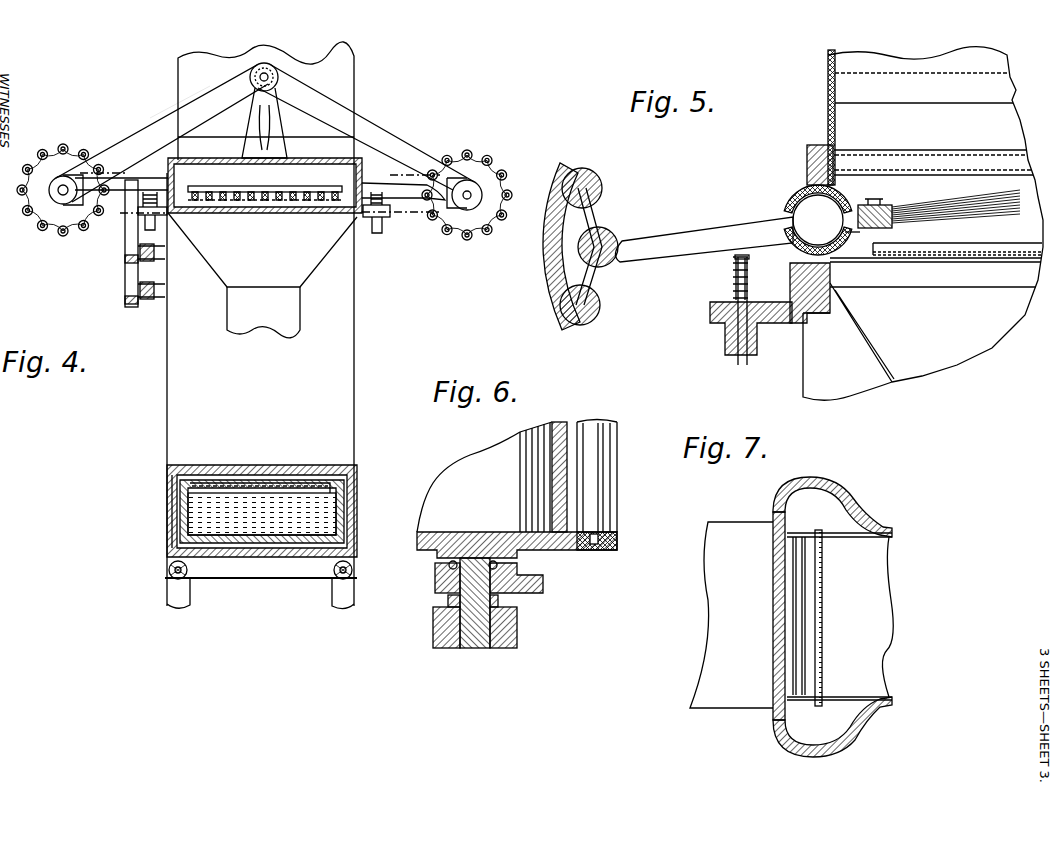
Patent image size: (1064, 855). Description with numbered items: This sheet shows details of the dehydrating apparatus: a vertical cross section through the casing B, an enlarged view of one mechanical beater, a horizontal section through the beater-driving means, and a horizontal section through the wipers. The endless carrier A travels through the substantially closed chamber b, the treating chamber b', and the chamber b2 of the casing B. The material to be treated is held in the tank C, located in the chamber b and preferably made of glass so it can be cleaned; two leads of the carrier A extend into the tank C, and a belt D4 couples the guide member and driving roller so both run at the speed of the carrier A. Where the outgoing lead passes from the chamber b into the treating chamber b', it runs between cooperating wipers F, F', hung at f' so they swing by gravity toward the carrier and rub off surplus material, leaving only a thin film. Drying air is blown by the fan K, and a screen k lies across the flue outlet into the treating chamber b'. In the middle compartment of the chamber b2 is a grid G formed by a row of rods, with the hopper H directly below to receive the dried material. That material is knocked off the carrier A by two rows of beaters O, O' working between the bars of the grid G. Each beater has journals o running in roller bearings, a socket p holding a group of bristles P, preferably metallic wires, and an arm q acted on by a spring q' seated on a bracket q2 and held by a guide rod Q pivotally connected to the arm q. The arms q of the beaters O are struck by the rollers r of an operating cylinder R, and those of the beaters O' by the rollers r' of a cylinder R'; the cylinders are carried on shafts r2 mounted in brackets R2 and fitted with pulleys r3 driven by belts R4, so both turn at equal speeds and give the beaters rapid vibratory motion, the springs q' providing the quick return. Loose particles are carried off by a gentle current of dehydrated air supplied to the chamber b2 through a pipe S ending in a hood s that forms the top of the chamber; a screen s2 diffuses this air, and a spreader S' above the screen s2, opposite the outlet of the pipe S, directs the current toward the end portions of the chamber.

In FIG. 4, the endless carrier A is at (327, 182).
In FIG. 5, the endless carrier A is at (967, 255).
In FIG. 7, the endless carrier A is at (800, 667).
In FIG. 4, the casing B is at (340, 336).
In FIG. 5, the casing B is at (847, 356).
In FIG. 7, the casing B is at (705, 621).
In FIG. 4, the tank C is at (240, 545).
In FIG. 4, the chamber b is at (262, 481).
In FIG. 7, the treating chamber b' is at (869, 494).
In FIG. 4, the chamber b2 is at (300, 190).
In FIG. 5, the chamber b2 is at (957, 234).
In FIG. 4, the belt D4 is at (123, 270).
In FIG. 7, the wiper F is at (806, 617).
In FIG. 7, the wiper F' is at (828, 616).
In FIG. 7, the pivot f' is at (829, 592).
In FIG. 4, the grid G is at (245, 202).
In FIG. 5, the grid G is at (923, 262).
In FIG. 4, the hopper H is at (308, 266).
In FIG. 5, the hopper H is at (917, 372).
In FIG. 4, the fan K is at (273, 69).
In FIG. 7, the screen k is at (823, 657).
In FIG. 4, the beater O is at (265, 139).
In FIG. 5, the beater O is at (805, 212).
In FIG. 4, the beater O' is at (389, 158).
In FIG. 5, the beater O' is at (838, 234).
In FIG. 5, the journal o is at (832, 220).
In FIG. 5, the bristles P is at (947, 212).
In FIG. 5, the socket p is at (887, 201).
In FIG. 5, the guide rod Q is at (743, 363).
In FIG. 4, the arm q is at (260, 168).
In FIG. 5, the arm q is at (704, 259).
In FIG. 4, the spring q' is at (281, 240).
In FIG. 5, the spring q' is at (729, 310).
In FIG. 4, the bracket q2 is at (362, 226).
In FIG. 5, the bracket q2 is at (725, 317).
In FIG. 4, the operating cylinder R is at (222, 205).
In FIG. 5, the operating cylinder R is at (547, 246).
In FIG. 6, the operating cylinder R is at (501, 490).
In FIG. 4, the cylinder R' is at (467, 170).
In FIG. 4, the bracket R2 is at (397, 128).
In FIG. 4, the belt R4 is at (147, 114).
In FIG. 4, the roller r is at (56, 251).
In FIG. 5, the roller r is at (589, 254).
In FIG. 6, the roller r is at (583, 476).
In FIG. 4, the roller r' is at (505, 235).
In FIG. 4, the shaft r2 is at (64, 178).
In FIG. 6, the shaft r2 is at (475, 648).
In FIG. 4, the pulley r3 is at (516, 143).
In FIG. 6, the pulley r3 is at (517, 623).
In FIG. 5, the pipe S is at (913, 214).
In FIG. 5, the spreader S' is at (934, 118).
In FIG. 5, the hood s is at (830, 92).
In FIG. 5, the screen s2 is at (932, 168).